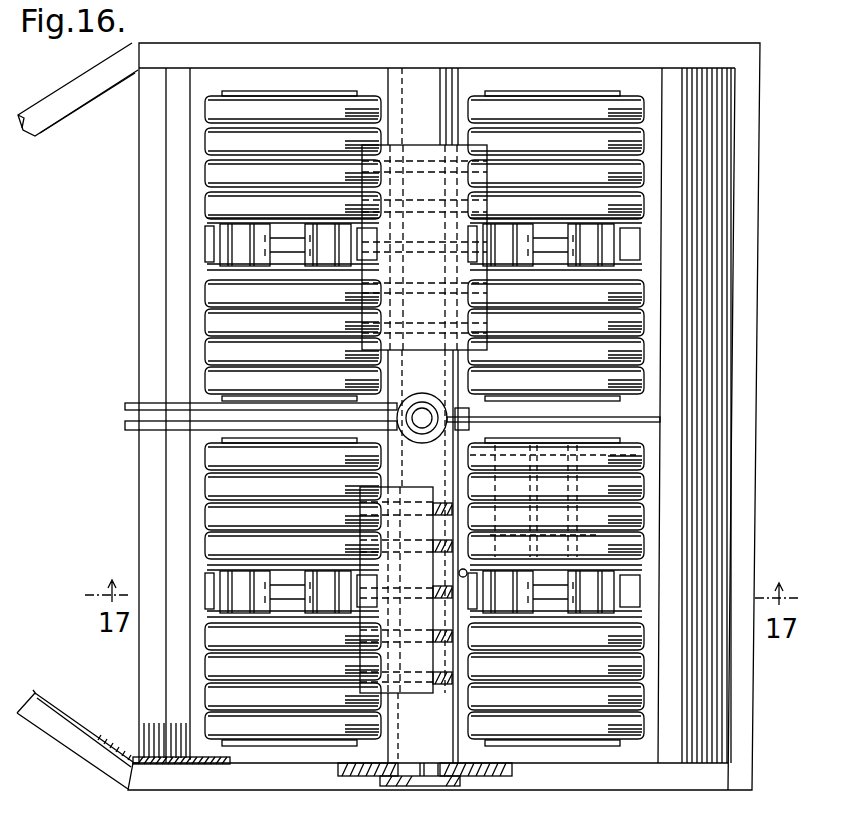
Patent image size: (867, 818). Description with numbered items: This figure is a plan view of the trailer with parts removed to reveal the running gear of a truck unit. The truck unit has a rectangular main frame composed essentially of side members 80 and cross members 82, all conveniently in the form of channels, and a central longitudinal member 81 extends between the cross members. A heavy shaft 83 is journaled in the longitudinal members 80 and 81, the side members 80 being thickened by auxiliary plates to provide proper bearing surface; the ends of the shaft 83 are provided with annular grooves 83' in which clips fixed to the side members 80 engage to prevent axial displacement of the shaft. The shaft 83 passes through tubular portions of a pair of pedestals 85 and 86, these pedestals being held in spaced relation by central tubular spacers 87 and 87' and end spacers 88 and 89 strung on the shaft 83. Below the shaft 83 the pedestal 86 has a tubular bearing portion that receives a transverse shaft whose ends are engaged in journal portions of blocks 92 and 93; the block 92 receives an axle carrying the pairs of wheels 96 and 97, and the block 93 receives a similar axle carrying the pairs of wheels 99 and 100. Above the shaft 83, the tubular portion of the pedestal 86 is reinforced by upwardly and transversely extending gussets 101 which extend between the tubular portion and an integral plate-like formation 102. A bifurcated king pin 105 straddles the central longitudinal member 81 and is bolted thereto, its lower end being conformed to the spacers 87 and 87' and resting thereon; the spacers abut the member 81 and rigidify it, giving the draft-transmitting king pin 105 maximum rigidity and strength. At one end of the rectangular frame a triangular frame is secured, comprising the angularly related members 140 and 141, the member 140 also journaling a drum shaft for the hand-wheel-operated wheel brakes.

The side members 80 is at (592, 55).
The cross members 82 is at (163, 297).
The angularly related member 140 is at (83, 85).
The angularly related member 141 is at (63, 728).
The end spacer 88 is at (453, 101).
The pedestal 85 is at (450, 190).
The pedestal 86 is at (440, 657).
The central tubular spacer 87 is at (445, 556).
The central tubular spacer 87' is at (446, 605).
The bifurcated king pin 105 is at (418, 446).
The central longitudinal member 81 is at (626, 428).
The pair of wheels 96 is at (210, 540).
The pair of wheels 97 is at (210, 690).
The pair of wheels 99 is at (640, 512).
The pair of wheels 100 is at (640, 685).
The block 92 is at (292, 591).
The block 93 is at (550, 591).
The gussets 101 is at (375, 552).
The plate-like formation 102 is at (397, 621).
The end spacer 89 is at (393, 745).
The shaft 83 is at (446, 790).
The annular grooves 83' is at (420, 796).